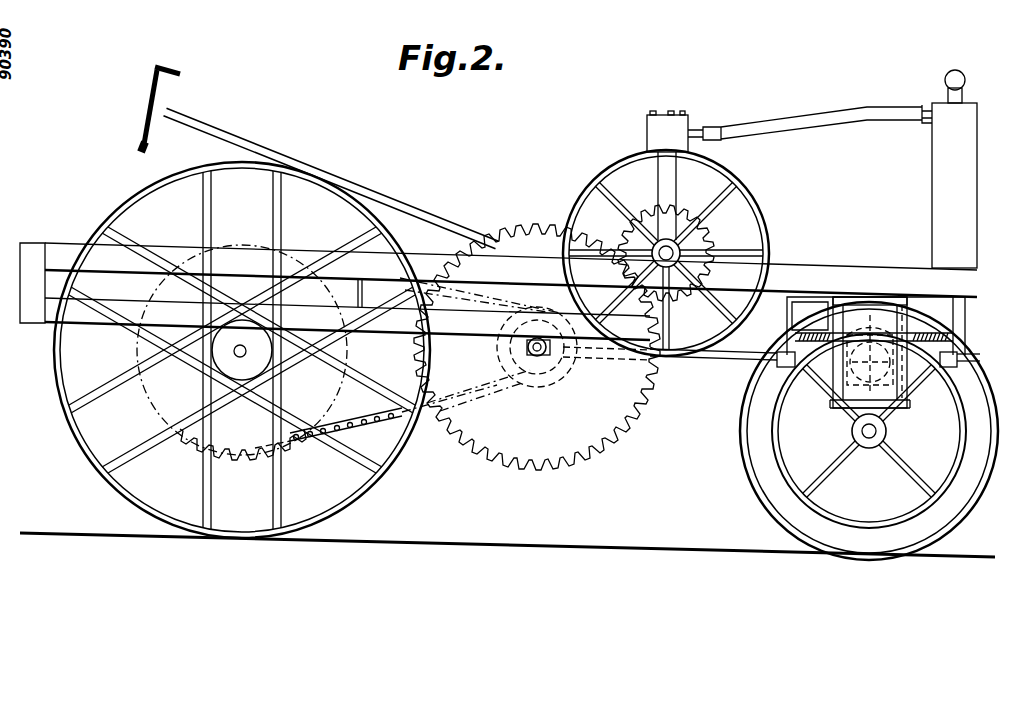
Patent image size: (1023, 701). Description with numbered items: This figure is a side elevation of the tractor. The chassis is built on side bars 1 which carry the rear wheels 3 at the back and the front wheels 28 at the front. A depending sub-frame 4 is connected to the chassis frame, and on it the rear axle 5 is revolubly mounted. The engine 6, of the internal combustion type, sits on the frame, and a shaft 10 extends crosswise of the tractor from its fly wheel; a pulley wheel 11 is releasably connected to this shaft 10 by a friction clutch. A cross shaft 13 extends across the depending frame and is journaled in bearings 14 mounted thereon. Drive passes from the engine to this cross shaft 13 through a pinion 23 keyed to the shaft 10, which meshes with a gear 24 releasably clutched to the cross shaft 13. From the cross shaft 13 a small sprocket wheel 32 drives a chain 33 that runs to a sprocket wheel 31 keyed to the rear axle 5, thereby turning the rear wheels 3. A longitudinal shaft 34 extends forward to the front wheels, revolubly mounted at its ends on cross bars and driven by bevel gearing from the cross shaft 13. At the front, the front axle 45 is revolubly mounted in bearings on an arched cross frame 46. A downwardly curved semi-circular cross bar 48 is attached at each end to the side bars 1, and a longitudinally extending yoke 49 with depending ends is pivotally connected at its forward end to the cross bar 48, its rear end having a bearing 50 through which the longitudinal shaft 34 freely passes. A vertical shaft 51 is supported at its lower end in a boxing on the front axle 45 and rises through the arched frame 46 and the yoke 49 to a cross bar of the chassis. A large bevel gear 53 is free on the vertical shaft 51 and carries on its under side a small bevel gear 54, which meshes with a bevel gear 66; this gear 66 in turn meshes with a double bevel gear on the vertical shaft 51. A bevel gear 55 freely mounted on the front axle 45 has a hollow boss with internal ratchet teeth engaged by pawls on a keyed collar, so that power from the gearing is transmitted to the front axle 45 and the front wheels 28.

The side bar 1 is at (415, 263).
The rear wheel 3 is at (283, 173).
The depending sub-frame 4 is at (387, 328).
The rear axle 5 is at (241, 345).
The engine 6 is at (670, 125).
The shaft 10 is at (673, 247).
The pulley wheel 11 is at (603, 182).
The cross shaft 13 is at (547, 357).
The bearing 14 is at (551, 351).
The pinion 23 is at (708, 250).
The gear 24 is at (537, 347).
The front wheel 28 is at (741, 441).
The sprocket wheel 31 is at (242, 359).
The small sprocket wheel 32 is at (530, 388).
The chain 33 is at (366, 416).
The longitudinal shaft 34 is at (713, 363).
The front axle 45 is at (868, 449).
The arched cross frame 46 is at (835, 384).
The downwardly curved semi-circular cross bar 48 is at (966, 333).
The longitudinally extending yoke 49 is at (810, 312).
The bearing 50 is at (778, 363).
The vertical shaft 51 is at (874, 292).
The large bevel gear 53 is at (960, 331).
The small bevel gear 54 is at (905, 292).
The bevel gear 55 is at (957, 453).
The bevel gear 66 is at (871, 355).